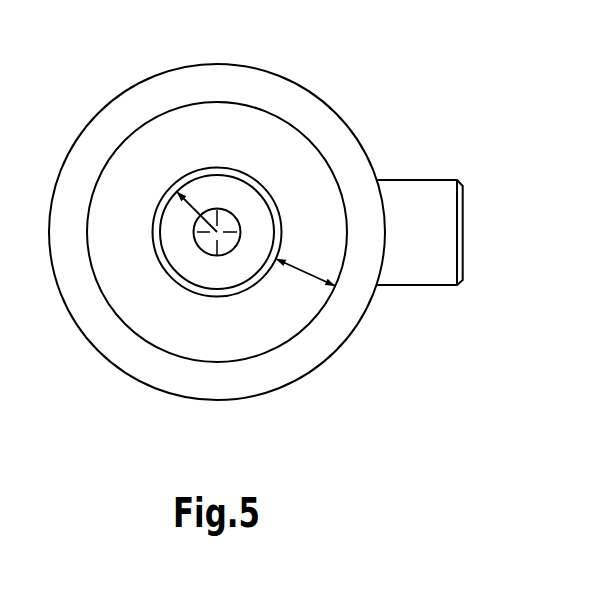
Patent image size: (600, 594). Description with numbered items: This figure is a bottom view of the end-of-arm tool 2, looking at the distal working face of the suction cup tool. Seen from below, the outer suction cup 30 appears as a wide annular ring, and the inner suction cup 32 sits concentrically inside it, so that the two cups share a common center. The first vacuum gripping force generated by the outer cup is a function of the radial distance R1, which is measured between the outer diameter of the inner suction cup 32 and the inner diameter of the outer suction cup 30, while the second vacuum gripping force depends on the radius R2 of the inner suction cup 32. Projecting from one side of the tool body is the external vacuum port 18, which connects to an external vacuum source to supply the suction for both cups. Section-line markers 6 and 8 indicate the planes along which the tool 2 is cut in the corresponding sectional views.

The tool 2 is at (344, 95).
The outer suction cup 30 is at (105, 127).
The inner suction cup 32 is at (216, 174).
The external vacuum port 18 is at (414, 208).
The section line 6- 6 is at (254, 443).
The section line 8- 8 is at (487, 195).
The radial distance R1 is at (300, 272).
The radius R2 is at (197, 212).